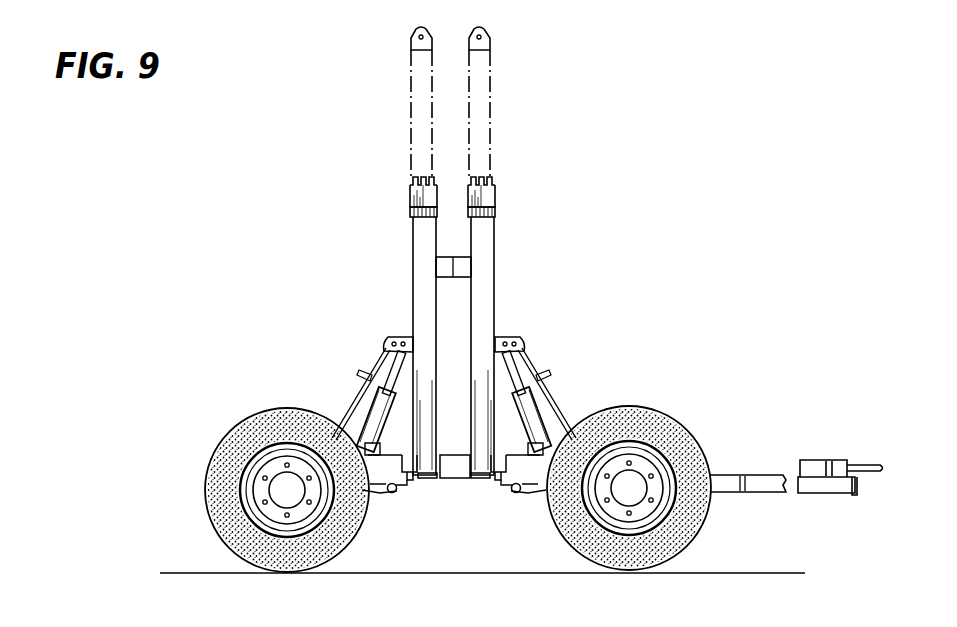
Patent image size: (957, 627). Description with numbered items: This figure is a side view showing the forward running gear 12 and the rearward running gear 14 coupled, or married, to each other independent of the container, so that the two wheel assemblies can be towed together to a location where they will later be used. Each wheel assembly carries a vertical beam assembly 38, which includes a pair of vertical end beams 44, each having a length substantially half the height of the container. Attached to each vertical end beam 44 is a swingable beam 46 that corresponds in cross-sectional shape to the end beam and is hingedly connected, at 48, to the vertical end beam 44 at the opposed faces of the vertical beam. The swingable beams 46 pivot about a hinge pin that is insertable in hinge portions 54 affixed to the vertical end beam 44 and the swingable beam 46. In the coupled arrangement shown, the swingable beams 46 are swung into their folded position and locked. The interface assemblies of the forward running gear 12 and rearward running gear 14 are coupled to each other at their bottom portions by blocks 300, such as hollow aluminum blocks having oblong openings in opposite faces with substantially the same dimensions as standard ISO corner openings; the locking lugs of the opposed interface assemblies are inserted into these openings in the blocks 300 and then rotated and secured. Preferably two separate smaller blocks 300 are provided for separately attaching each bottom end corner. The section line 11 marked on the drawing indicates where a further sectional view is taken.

The swingable beam 46 is at (411, 104).
The hinged connection 48 is at (404, 213).
The vertical beam assembly 38 is at (406, 229).
The vertical end beam 44 is at (423, 305).
The hinge portion 54 is at (420, 218).
The section line 11 is at (402, 256).
The forward running gear 12 is at (550, 359).
The rearward running gear 14 is at (356, 367).
The block 300 is at (458, 482).